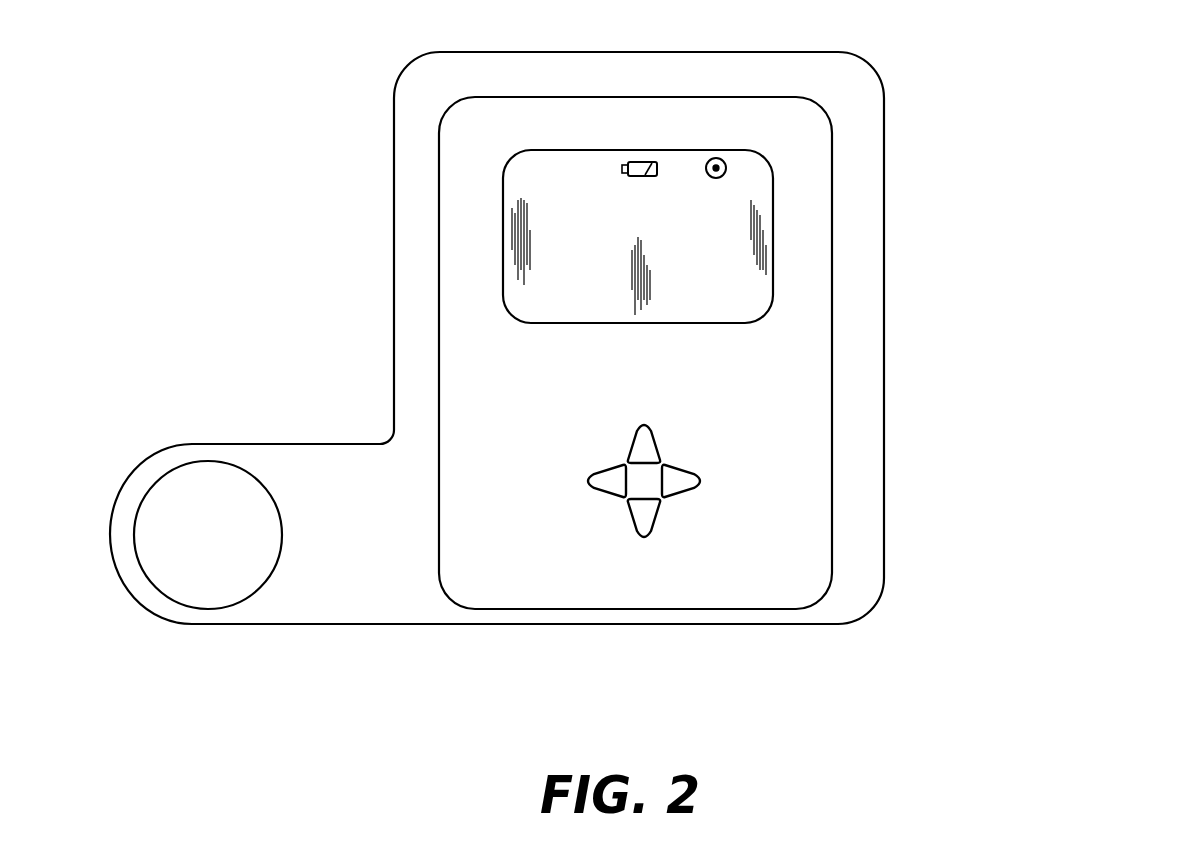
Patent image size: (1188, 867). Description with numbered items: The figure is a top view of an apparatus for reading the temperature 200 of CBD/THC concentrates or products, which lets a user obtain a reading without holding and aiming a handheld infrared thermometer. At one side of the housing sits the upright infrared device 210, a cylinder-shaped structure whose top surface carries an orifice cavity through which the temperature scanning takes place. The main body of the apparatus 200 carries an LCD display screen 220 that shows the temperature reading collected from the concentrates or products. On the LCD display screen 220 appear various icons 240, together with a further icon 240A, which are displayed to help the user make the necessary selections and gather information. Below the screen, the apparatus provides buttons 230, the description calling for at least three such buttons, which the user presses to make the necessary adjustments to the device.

The apparatus for reading the temperature 200 is at (926, 42).
The upright infrared device 210 is at (190, 535).
The LCD display screen 220 is at (767, 262).
The directional pad 230 is at (678, 517).
The icons 240 is at (626, 176).
The sensor / lens indicator 240A is at (730, 178).